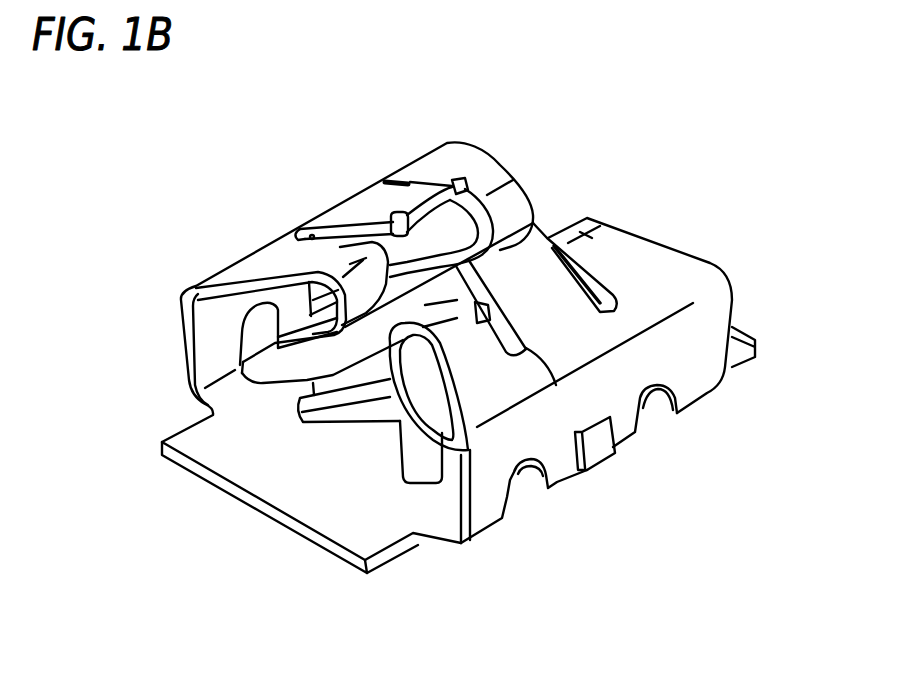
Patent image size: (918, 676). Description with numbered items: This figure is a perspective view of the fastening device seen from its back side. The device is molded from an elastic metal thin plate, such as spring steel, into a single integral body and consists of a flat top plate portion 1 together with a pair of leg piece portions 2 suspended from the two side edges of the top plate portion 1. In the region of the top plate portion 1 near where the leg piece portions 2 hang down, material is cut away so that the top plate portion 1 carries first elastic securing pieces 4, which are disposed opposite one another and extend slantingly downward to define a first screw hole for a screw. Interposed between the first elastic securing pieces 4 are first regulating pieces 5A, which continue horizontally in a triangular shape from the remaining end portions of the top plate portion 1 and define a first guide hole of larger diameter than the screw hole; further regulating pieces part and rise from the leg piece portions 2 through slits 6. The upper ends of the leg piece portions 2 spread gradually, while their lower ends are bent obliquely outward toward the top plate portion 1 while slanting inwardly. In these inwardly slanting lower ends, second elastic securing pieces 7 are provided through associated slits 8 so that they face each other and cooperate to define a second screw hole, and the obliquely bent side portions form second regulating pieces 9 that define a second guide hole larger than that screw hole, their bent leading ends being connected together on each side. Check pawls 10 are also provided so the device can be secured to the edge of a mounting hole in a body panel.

The top plate portion 1 is at (203, 446).
The leg piece portions 2 is at (157, 307).
The first elastic securing pieces 4 is at (240, 372).
The first regulating pieces 5A is at (390, 432).
The slits 6 is at (517, 495).
The second elastic securing pieces 7 is at (413, 181).
The slits 8 is at (390, 181).
The second regulating pieces 9 is at (490, 178).
The check pawls 10 is at (598, 447).